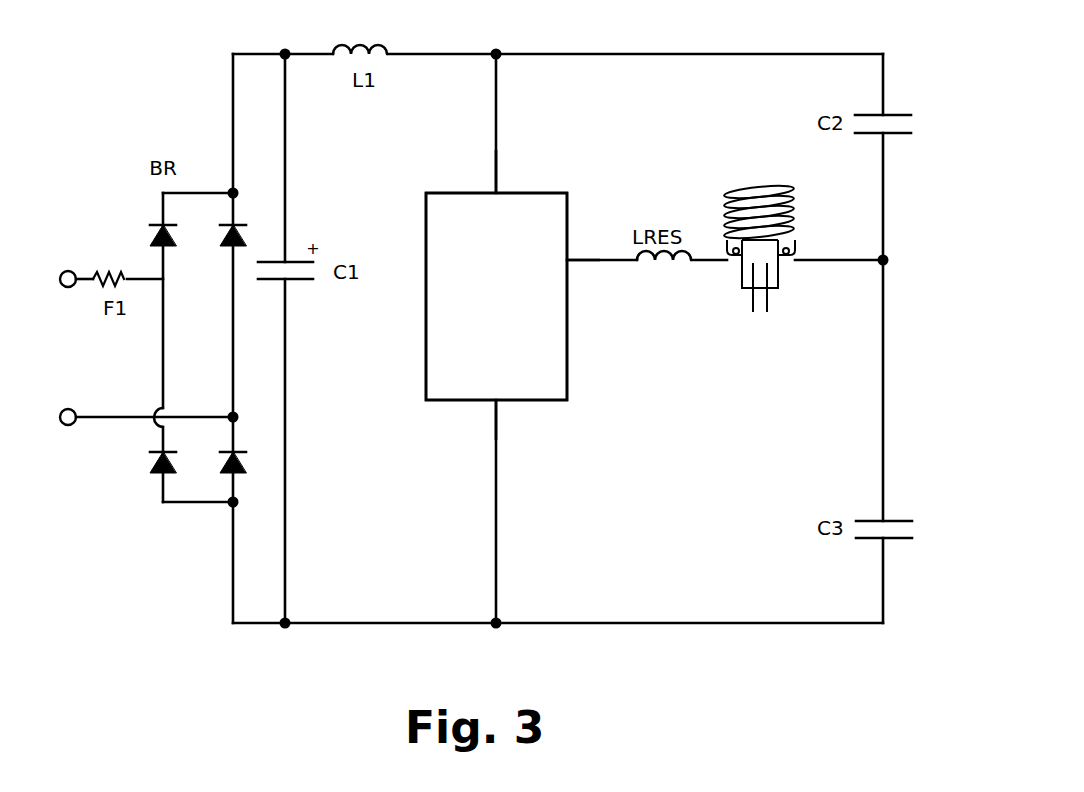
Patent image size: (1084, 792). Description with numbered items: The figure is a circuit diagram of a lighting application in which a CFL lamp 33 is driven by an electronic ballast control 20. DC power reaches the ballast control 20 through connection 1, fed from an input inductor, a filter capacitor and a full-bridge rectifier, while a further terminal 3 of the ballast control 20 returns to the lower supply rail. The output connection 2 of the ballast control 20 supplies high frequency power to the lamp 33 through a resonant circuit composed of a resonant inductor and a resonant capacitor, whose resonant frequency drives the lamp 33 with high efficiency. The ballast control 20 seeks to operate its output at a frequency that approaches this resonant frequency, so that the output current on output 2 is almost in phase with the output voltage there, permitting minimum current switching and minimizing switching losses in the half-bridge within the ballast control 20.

The ballast control 20 is at (567, 376).
The CFL lamp 33 is at (818, 166).
The connection 1 is at (508, 171).
The output connection 2 is at (583, 245).
The ballast control terminal 3 is at (508, 420).